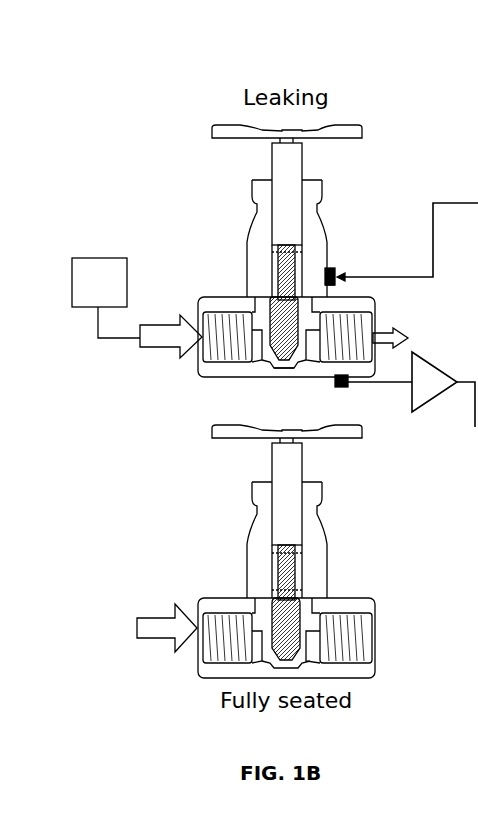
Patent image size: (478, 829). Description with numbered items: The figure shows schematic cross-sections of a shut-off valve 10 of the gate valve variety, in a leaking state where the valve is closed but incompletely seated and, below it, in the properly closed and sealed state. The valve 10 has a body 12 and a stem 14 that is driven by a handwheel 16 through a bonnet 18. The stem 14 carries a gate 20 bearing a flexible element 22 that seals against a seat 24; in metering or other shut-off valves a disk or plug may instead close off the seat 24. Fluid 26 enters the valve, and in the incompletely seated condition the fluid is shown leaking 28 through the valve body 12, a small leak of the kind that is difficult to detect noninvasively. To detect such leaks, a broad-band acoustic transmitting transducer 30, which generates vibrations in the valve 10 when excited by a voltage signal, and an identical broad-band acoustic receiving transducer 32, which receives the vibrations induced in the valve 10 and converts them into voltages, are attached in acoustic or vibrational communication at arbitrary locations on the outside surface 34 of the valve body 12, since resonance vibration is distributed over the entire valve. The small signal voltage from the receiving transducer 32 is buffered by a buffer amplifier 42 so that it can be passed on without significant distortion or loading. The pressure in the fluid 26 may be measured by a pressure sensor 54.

The shut-off valve 10 is at (289, 233).
The body 12 is at (246, 250).
The stem 14 is at (277, 270).
The handwheel 16 is at (211, 139).
The bonnet 18 is at (287, 191).
The gate 20 is at (266, 334).
The flexible element 22 is at (292, 355).
The seat 24 is at (283, 362).
The fluid 26 is at (158, 350).
The leaking 28 is at (380, 329).
The broad-band acoustic transmitting transducer 30 is at (401, 244).
The broad-band acoustic receiving transducer 32 is at (352, 385).
The outside surface 34 is at (328, 287).
The buffer amplifier 42 is at (435, 356).
The pressure sensor 54 is at (106, 298).